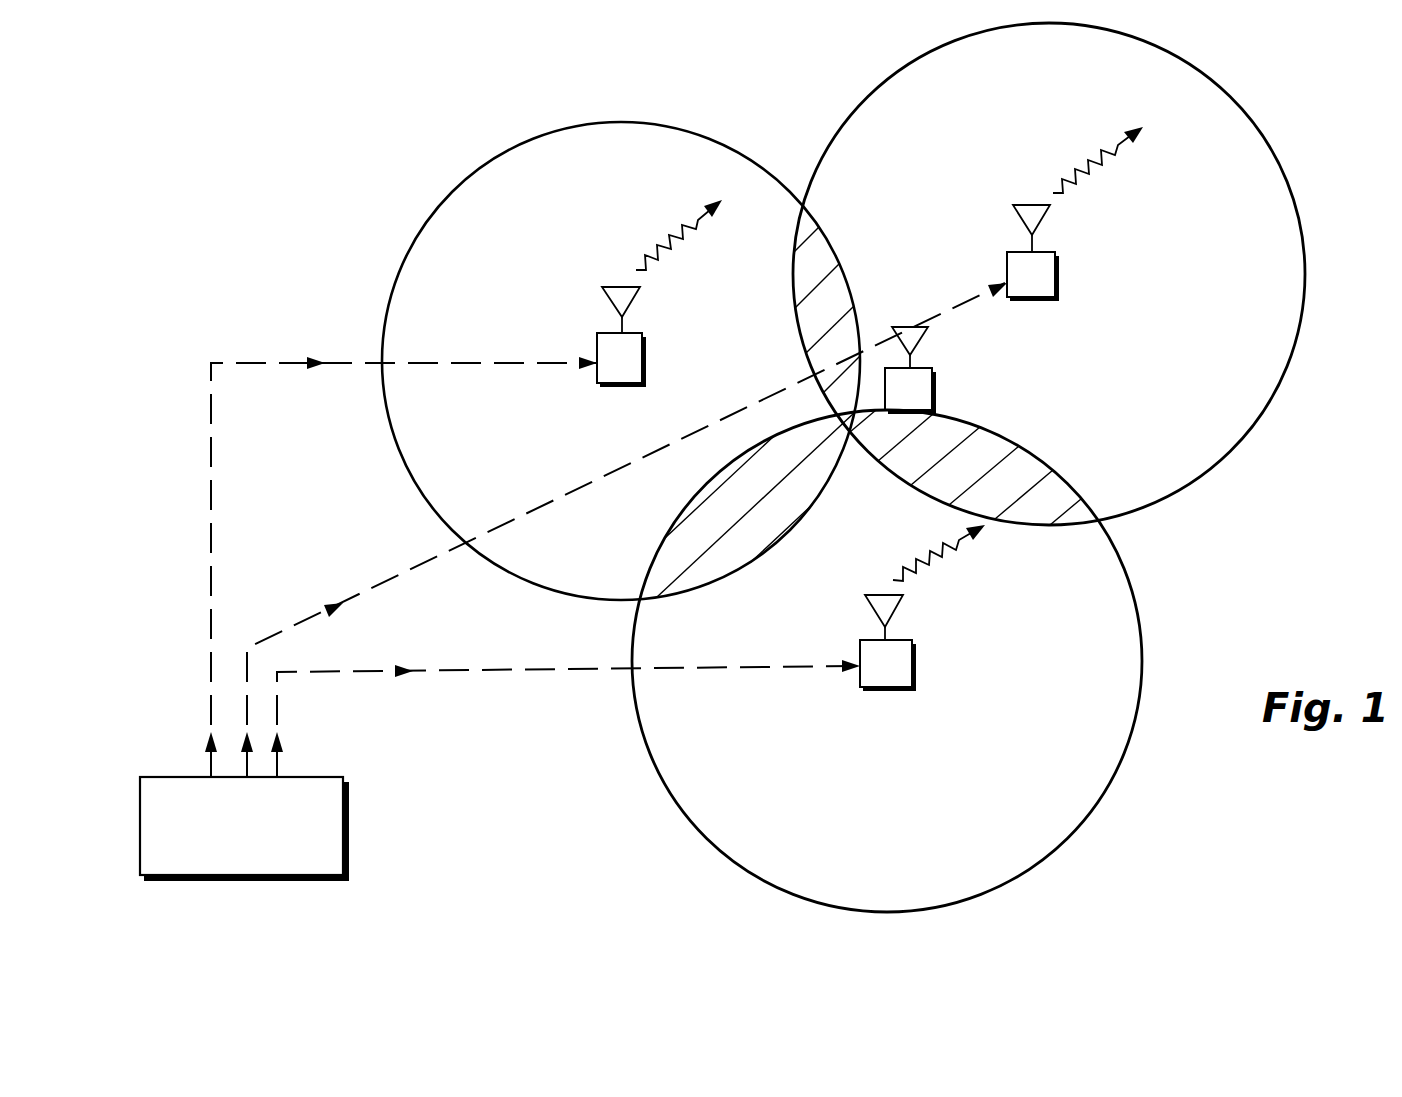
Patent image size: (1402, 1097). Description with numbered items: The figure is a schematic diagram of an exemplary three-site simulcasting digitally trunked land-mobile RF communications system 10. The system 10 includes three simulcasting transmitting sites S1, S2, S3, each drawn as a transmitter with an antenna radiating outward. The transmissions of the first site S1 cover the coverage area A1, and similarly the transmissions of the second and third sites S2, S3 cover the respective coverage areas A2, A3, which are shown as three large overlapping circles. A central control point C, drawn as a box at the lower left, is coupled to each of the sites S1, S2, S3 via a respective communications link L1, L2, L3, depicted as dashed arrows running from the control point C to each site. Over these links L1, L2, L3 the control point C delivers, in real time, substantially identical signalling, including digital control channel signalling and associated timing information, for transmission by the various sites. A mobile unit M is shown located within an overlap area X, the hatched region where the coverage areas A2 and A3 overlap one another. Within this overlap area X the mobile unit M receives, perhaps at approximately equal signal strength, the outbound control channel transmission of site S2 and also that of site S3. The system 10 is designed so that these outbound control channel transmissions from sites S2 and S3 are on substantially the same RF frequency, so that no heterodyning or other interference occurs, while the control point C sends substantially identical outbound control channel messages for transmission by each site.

The simulcasting digitally trunked land-mobile RF communications system 10 is at (741, 95).
The coverage area A1 is at (589, 130).
The coverage area A2 is at (1213, 80).
The coverage area A3 is at (667, 795).
The simulcasting transmitting site S1 is at (597, 387).
The simulcasting transmitting site S2 is at (1033, 300).
The simulcasting transmitting site S3 is at (870, 690).
The mobile unit M is at (934, 392).
The overlap area X is at (1013, 437).
The central control point C is at (345, 802).
The communications link L1 is at (248, 365).
The communications link L2 is at (387, 577).
The communications link L3 is at (495, 670).